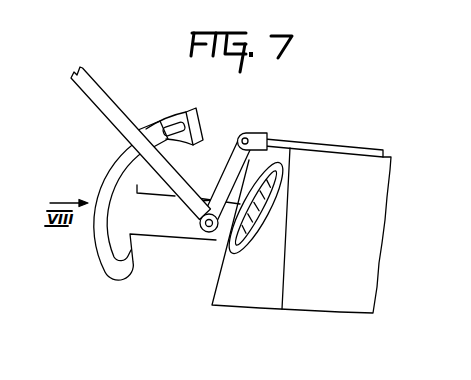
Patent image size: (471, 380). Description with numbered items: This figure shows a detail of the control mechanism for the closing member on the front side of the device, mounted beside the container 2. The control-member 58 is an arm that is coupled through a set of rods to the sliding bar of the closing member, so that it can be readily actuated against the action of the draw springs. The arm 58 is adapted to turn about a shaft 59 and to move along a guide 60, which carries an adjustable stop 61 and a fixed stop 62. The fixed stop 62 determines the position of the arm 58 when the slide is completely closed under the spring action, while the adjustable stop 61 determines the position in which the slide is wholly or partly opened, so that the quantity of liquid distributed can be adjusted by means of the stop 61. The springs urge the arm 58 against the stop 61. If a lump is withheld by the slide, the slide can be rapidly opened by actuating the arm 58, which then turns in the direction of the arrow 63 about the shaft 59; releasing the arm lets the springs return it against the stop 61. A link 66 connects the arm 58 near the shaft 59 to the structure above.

The container 2 is at (375, 268).
The control-member 58 is at (91, 73).
The shaft 59 is at (206, 233).
The guide 60 is at (134, 258).
The adjustable stop 61 is at (155, 132).
The fixed stop 62 is at (199, 125).
The arrow 63 is at (84, 124).
The link 66 is at (226, 170).